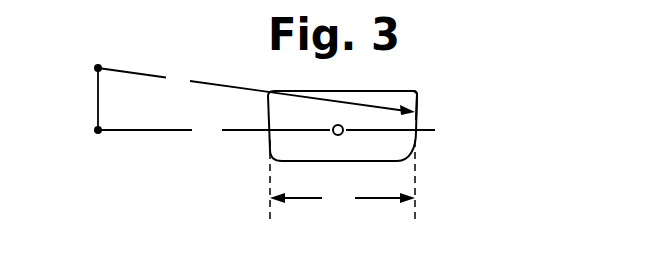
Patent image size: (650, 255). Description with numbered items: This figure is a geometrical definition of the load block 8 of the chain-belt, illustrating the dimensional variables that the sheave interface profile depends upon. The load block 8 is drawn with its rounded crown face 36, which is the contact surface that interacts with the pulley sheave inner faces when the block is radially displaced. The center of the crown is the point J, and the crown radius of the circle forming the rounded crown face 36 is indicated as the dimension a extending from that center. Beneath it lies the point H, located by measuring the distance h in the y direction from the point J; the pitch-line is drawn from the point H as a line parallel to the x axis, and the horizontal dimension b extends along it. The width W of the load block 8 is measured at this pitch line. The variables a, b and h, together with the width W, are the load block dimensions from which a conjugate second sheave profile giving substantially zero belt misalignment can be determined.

The load block 8 is at (283, 144).
The rounded crown face 36 is at (419, 102).
The center of the crown J is at (87, 51).
The point H is at (87, 144).
The dimensional variable h is at (84, 99).
The crown radius a is at (256, 91).
The dimensional variable b is at (266, 128).
The width of the block W is at (342, 181).